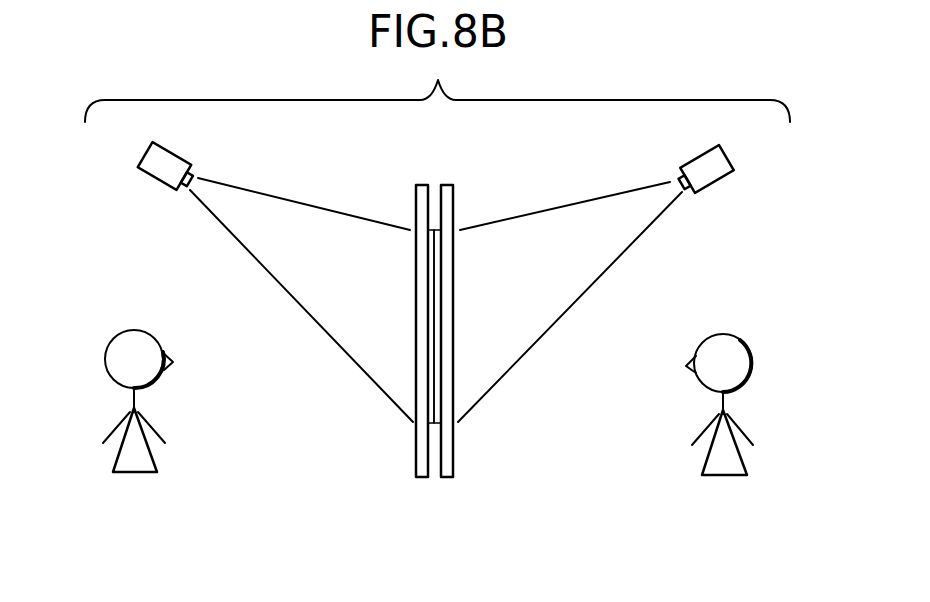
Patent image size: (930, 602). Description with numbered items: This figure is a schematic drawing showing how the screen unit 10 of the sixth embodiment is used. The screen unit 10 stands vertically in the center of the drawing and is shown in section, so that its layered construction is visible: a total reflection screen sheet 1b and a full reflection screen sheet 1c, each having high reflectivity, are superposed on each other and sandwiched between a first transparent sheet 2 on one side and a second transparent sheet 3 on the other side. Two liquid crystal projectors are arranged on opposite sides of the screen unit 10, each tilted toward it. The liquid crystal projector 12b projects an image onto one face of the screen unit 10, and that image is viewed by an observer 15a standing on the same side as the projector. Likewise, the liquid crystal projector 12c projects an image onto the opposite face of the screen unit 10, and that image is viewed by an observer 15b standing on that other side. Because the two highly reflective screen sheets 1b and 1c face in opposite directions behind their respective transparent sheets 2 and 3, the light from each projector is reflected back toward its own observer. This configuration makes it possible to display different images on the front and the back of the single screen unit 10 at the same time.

The screen unit 10 is at (432, 356).
The second transparent sheet 3 is at (416, 210).
The first transparent sheet 2 is at (453, 210).
The total reflection screen sheet 1b is at (438, 277).
The full reflection screen sheet 1c is at (428, 297).
The liquid crystal projector 12b is at (718, 186).
The liquid crystal projector 12c is at (153, 181).
The observer 15a is at (702, 385).
The observer 15b is at (160, 380).